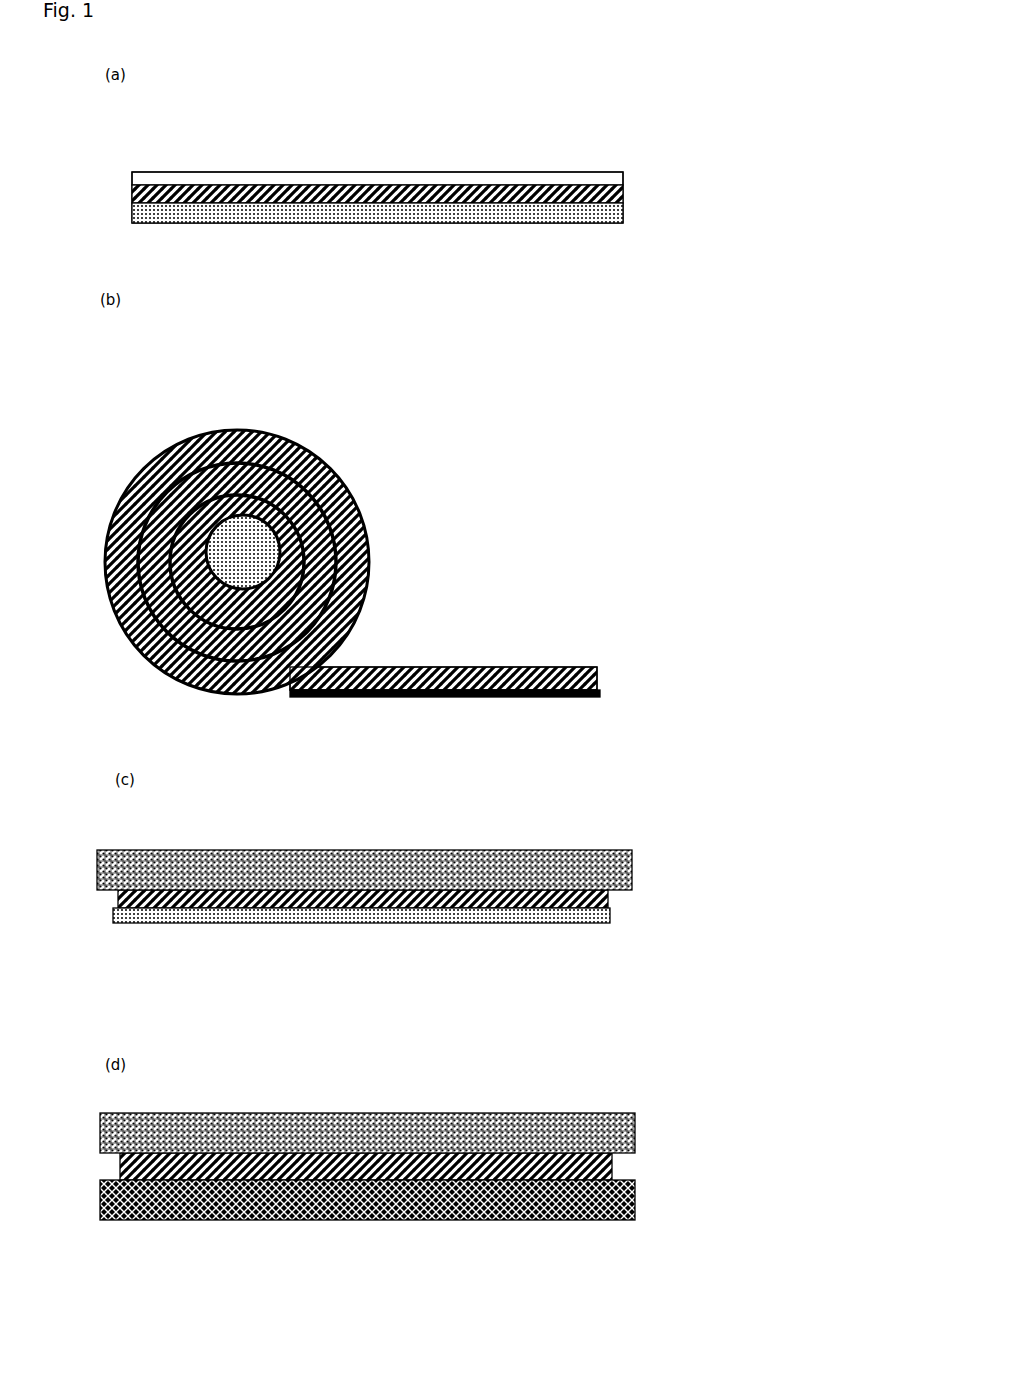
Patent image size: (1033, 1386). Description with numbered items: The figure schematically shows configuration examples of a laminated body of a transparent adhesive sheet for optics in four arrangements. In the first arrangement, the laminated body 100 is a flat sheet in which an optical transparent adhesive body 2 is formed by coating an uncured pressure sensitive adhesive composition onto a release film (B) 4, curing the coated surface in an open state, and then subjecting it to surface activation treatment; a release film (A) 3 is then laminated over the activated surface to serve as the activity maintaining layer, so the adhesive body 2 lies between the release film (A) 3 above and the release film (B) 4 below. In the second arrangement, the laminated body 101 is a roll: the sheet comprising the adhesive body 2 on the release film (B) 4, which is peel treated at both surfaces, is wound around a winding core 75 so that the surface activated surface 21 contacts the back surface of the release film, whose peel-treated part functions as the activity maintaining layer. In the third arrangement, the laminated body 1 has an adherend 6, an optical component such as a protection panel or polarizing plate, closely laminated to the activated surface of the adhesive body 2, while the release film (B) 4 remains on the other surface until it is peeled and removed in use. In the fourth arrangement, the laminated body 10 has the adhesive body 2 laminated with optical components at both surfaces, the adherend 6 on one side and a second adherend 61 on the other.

The laminated body of transparent adhesive sheet for optics 100 is at (568, 172).
The release film (A) 3 is at (400, 172).
The optical transparent adhesive body 2 is at (623, 198).
The release film (B) 4 is at (353, 223).
The laminated body of transparent adhesive sheet for optics 101 is at (290, 425).
The winding core 75 is at (257, 553).
The surface activated surface 21 is at (487, 667).
The adherend 6 is at (632, 865).
The laminated body of transparent adhesive sheet for optics 1 is at (760, 840).
The adherend 61 is at (635, 1190).
The laminated body of transparent adhesive sheet for optics 10 is at (764, 1105).